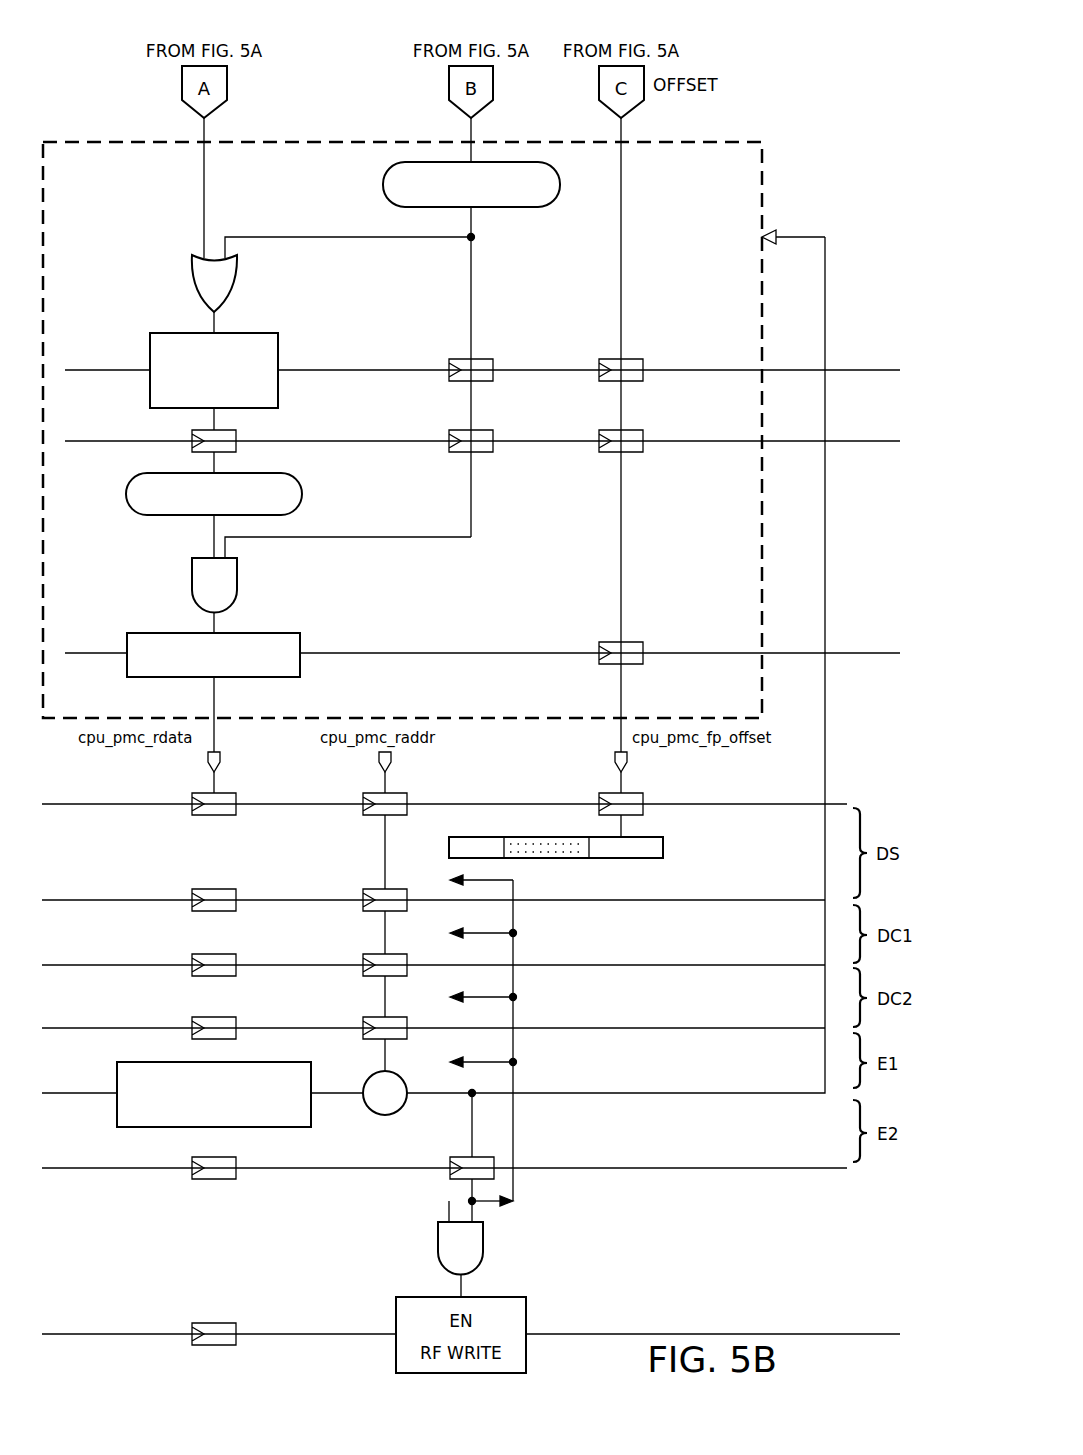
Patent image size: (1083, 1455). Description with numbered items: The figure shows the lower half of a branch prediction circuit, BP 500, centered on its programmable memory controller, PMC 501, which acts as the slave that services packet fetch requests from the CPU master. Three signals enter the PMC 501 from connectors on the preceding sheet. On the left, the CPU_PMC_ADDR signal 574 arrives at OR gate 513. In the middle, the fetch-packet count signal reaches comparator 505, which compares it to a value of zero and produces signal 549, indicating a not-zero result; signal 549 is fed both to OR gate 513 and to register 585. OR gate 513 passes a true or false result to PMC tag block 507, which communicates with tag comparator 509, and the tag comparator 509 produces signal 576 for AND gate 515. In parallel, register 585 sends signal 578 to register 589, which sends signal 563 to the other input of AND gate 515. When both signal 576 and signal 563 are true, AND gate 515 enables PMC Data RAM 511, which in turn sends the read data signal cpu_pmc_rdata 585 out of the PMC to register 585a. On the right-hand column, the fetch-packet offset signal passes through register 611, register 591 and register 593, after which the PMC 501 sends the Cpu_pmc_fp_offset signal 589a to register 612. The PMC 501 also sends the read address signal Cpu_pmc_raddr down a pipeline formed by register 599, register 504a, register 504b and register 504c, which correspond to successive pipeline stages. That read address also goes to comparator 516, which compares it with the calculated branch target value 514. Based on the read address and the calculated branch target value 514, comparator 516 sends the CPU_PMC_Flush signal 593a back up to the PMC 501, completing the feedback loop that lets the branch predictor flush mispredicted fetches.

The BP 500 is at (332, 66).
The programmable memory controller 501 is at (711, 212).
The comparator 505 is at (385, 185).
The PMC tag block 507 is at (150, 362).
The tag comparator 509 is at (126, 494).
The PMC Data RAM 511 is at (127, 643).
The OR gate 513 is at (195, 280).
The calculated branch target value 514 is at (117, 1100).
The AND gate 515 is at (192, 580).
The comparator 516 is at (380, 1116).
The signal 549 is at (352, 241).
The signal 563 is at (352, 540).
The CPU_PMC_ADDR signal 574 is at (202, 190).
The signal 576 is at (201, 538).
The signal 578 is at (474, 405).
The register 585 is at (480, 359).
The register 585a is at (192, 795).
The register 589 is at (476, 455).
The Cpu_pmc_fp_offset signal 589a is at (628, 760).
The register 591 is at (625, 455).
The register 593 is at (645, 664).
The CPU_PMC_Flush signal 593a is at (668, 1096).
The register 599 is at (378, 818).
The register 611 is at (630, 359).
The register 612 is at (633, 818).
The register 504a is at (370, 913).
The register 504b is at (370, 977).
The register 504c is at (368, 1040).